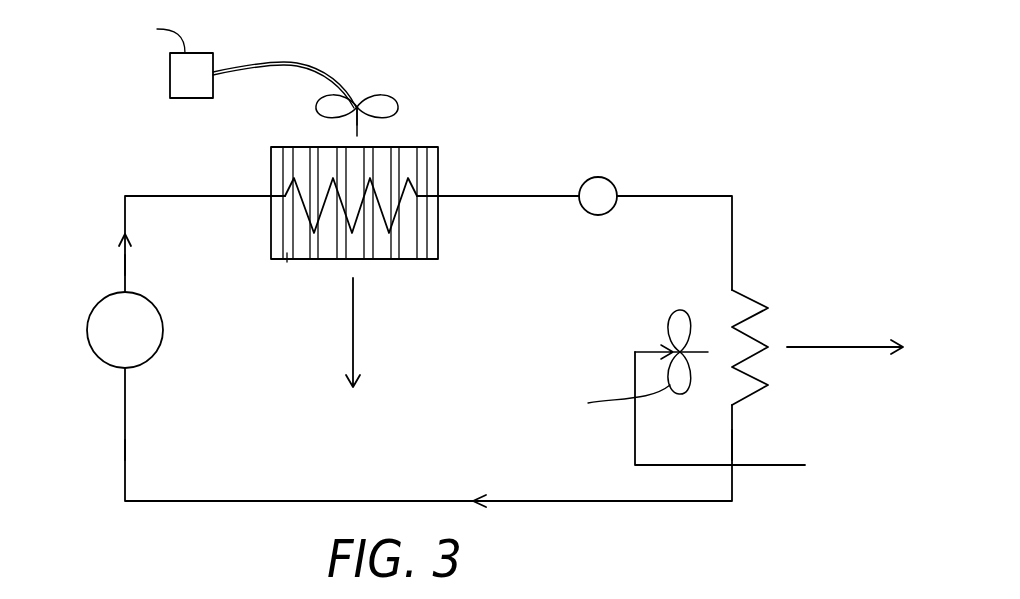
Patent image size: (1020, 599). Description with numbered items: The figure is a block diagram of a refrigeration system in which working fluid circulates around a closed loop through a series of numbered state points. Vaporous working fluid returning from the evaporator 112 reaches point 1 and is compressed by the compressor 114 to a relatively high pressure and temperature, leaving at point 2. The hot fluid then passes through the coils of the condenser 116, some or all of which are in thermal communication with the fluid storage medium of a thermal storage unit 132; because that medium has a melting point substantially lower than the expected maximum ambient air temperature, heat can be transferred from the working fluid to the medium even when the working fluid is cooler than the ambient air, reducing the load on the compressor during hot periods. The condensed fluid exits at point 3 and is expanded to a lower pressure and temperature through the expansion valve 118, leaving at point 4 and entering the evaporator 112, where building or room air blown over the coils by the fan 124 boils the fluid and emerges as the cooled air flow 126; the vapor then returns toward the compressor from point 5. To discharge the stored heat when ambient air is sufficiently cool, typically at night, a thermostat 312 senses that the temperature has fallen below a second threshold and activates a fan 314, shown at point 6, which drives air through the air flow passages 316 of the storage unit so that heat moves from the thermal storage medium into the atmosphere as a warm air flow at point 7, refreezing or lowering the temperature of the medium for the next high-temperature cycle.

The state point 1 (compressor inlet) 1 is at (114, 421).
The state point 2 (compressor outlet) 2 is at (114, 271).
The state point 3 (condenser outlet) 3 is at (457, 181).
The state point 4 (expansion device outlet) 4 is at (655, 177).
The state point 5 (evaporator outlet) 5 is at (746, 444).
The condenser fan 6 is at (365, 99).
The warm air flow 7 is at (377, 332).
The evaporator 112 is at (753, 298).
The compressor 114 is at (163, 337).
The condenser 116 is at (412, 185).
The expansion valve 118 is at (608, 177).
The fan 124 is at (672, 322).
The cooled air flow 126 is at (818, 348).
The thermal storage unit 132 is at (433, 220).
The thermostat 312 is at (180, 77).
The fan 314 is at (398, 103).
The air flow passages 316 is at (287, 262).